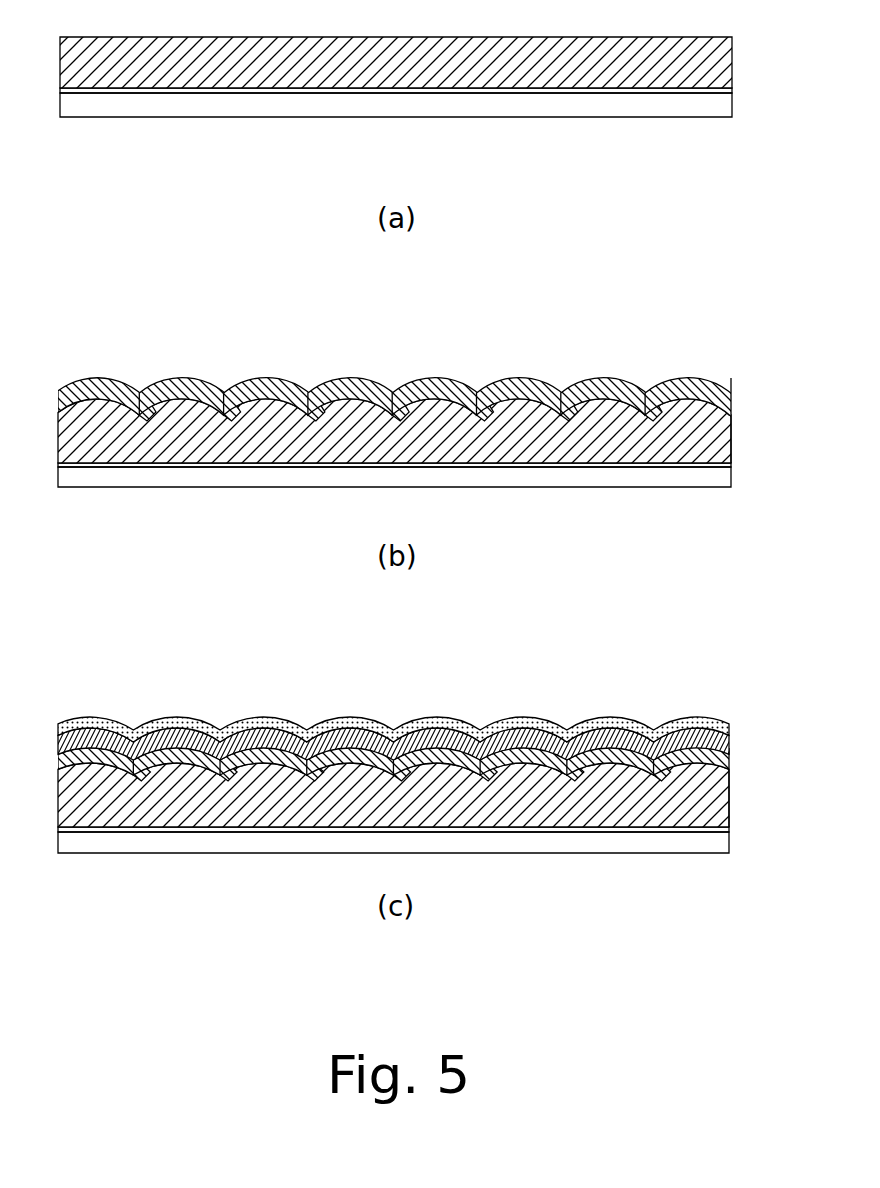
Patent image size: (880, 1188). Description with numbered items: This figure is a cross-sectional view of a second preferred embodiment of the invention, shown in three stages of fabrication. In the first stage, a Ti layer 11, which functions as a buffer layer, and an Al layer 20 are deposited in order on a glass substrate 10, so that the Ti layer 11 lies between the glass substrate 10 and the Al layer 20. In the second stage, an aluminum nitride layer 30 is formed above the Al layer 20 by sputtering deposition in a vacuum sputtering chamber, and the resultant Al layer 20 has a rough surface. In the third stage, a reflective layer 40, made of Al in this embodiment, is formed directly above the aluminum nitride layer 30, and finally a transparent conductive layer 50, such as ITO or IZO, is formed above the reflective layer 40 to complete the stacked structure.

The glass substrate 10 is at (732, 110).
The Ti layer 11 is at (732, 90).
The Al layer 20 is at (732, 50).
The aluminum nitride layer 30 is at (731, 400).
The reflective layer 40 is at (729, 757).
The transparent conductive layer 50 is at (729, 727).